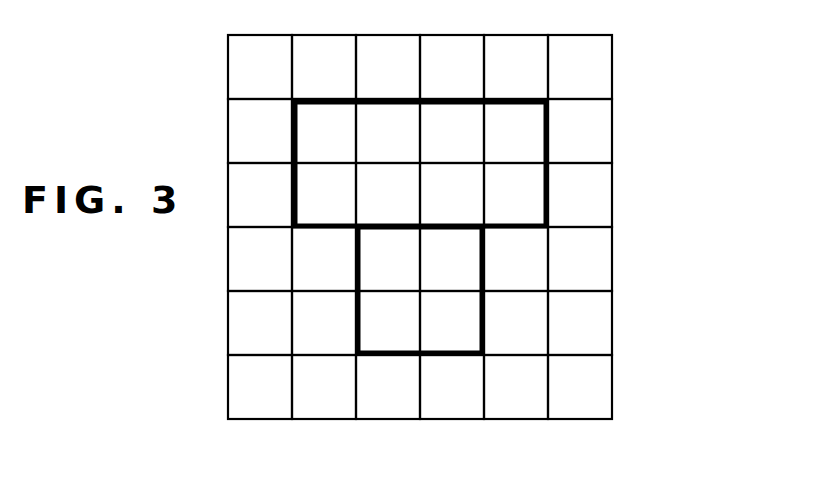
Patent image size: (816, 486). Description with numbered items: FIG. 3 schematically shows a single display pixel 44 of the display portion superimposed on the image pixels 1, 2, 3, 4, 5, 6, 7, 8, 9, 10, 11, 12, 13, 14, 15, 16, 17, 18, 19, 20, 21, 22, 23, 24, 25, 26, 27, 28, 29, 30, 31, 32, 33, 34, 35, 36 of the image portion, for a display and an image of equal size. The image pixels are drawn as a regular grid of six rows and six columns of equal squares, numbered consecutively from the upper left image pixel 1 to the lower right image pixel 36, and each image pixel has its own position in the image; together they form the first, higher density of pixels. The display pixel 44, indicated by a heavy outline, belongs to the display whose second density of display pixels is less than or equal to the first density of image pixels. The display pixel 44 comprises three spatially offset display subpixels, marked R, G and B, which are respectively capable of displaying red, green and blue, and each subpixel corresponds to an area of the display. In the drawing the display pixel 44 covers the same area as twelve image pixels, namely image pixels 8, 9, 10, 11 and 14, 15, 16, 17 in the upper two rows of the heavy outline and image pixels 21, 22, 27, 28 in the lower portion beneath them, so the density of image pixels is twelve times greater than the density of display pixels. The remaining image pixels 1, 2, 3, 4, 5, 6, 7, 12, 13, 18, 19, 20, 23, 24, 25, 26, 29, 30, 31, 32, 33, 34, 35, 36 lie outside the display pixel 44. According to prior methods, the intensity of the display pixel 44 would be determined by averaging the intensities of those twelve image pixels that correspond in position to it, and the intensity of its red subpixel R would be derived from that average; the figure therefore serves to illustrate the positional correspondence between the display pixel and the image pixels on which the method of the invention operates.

The display pixel 44 is at (549, 155).
The image pixel 1 is at (260, 67).
The image pixel 2 is at (324, 67).
The image pixel 3 is at (388, 67).
The image pixel 4 is at (452, 67).
The image pixel 5 is at (516, 67).
The image pixel 6 is at (580, 67).
The image pixel 7 is at (260, 131).
The image pixel 8 is at (324, 131).
The image pixel 9 is at (388, 131).
The image pixel 10 is at (452, 131).
The image pixel 11 is at (516, 131).
The image pixel 12 is at (580, 131).
The image pixel 13 is at (260, 195).
The image pixel 14 is at (324, 195).
The image pixel 15 is at (388, 195).
The image pixel 16 is at (452, 195).
The image pixel 17 is at (516, 195).
The image pixel 18 is at (580, 195).
The image pixel 19 is at (260, 259).
The image pixel 20 is at (324, 259).
The image pixel 21 is at (388, 259).
The image pixel 22 is at (452, 259).
The image pixel 23 is at (516, 259).
The image pixel 24 is at (580, 259).
The image pixel 25 is at (260, 323).
The image pixel 26 is at (324, 323).
The image pixel 27 is at (388, 323).
The image pixel 28 is at (452, 323).
The image pixel 29 is at (516, 323).
The image pixel 30 is at (580, 323).
The image pixel 31 is at (260, 387).
The image pixel 32 is at (324, 387).
The image pixel 33 is at (388, 387).
The image pixel 34 is at (452, 387).
The image pixel 35 is at (516, 387).
The image pixel 36 is at (580, 387).